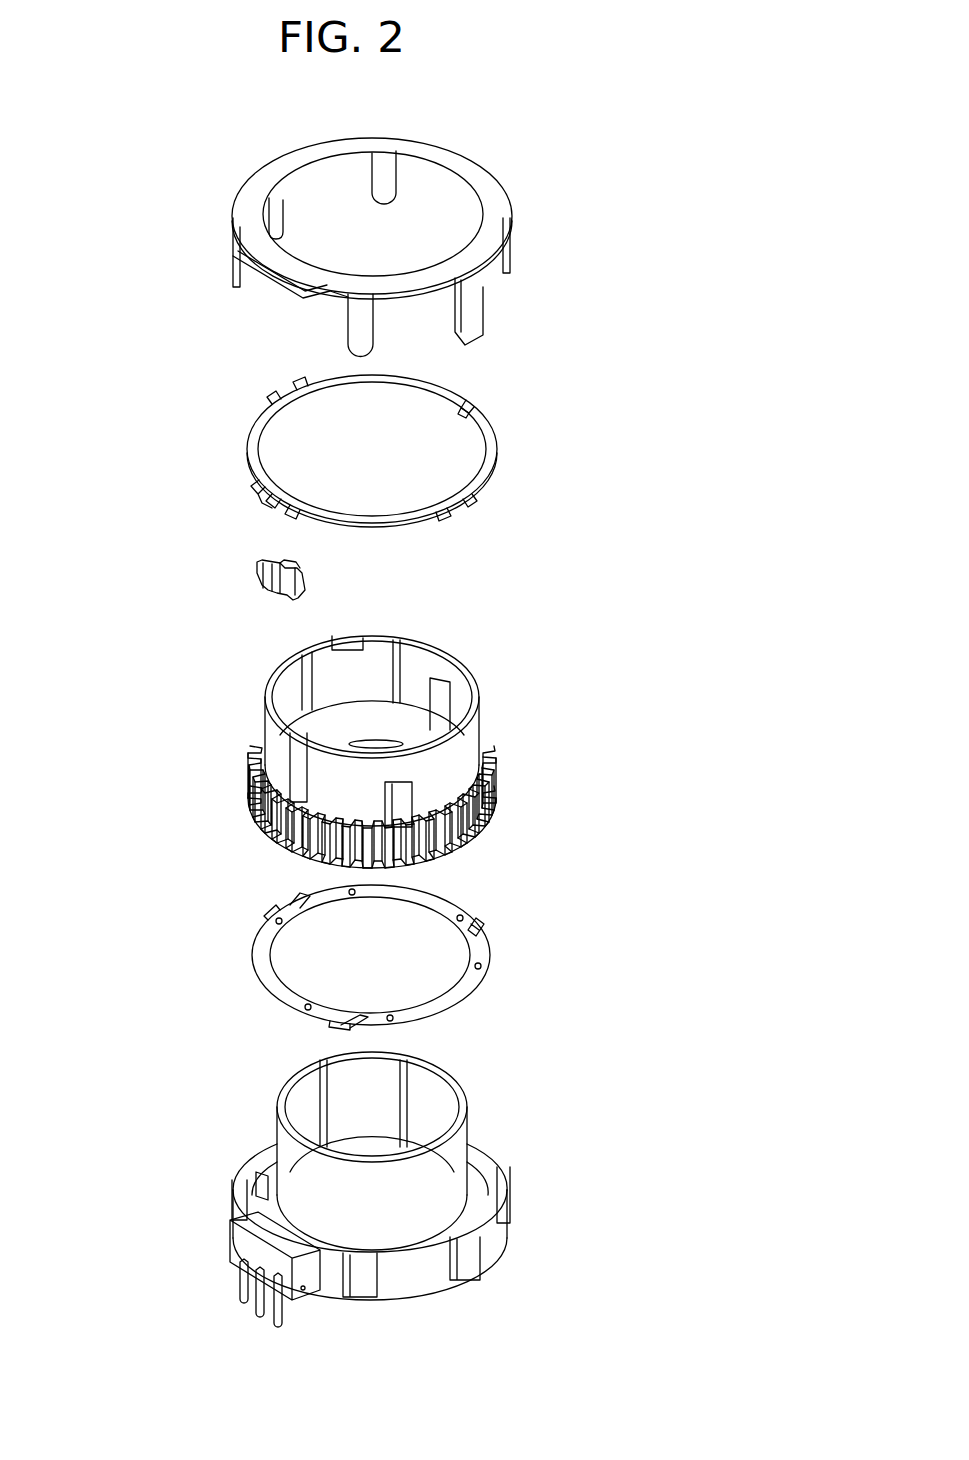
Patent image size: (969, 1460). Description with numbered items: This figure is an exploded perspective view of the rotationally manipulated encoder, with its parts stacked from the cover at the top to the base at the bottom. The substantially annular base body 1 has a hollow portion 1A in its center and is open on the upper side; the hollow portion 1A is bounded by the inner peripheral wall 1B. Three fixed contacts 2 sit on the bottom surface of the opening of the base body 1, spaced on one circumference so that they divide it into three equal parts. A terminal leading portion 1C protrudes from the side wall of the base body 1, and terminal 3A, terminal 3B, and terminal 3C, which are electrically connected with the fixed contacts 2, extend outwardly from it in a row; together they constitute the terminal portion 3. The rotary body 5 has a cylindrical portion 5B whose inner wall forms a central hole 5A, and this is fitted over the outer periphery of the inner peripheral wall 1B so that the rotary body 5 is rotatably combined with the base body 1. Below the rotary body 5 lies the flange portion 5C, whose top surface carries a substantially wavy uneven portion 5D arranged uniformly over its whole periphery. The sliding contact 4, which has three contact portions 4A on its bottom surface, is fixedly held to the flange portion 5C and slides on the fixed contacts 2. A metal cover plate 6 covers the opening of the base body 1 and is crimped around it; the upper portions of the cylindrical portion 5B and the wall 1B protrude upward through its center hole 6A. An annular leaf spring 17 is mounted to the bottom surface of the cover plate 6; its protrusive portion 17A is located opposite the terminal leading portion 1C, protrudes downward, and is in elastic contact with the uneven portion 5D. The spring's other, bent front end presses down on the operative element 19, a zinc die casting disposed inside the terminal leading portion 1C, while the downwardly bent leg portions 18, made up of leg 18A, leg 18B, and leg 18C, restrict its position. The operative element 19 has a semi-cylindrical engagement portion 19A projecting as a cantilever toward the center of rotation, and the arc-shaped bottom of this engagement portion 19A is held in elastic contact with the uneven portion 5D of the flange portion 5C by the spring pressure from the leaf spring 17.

The base body 1 is at (338, 1199).
The hollow portion 1A is at (378, 1121).
The inner peripheral wall 1B is at (443, 1175).
The terminal leading portion 1C is at (243, 1239).
The fixed contacts 2 is at (263, 1197).
The terminal portion 3 is at (177, 1300).
The terminal 3A is at (238, 1293).
The terminal 3B is at (256, 1310).
The terminal 3C is at (274, 1320).
The sliding contact 4 is at (431, 956).
The contact portions 4A is at (480, 933).
The rotary body 5 is at (404, 741).
The central hole 5A is at (358, 725).
The cylindrical portion 5B is at (473, 670).
The flange portion 5C is at (429, 810).
The uneven portion 5D is at (493, 788).
The cover plate 6 is at (417, 247).
The center hole 6A is at (417, 208).
The annular leaf spring 17 is at (362, 456).
The protrusive portion 17A is at (455, 411).
The leg portions 18 is at (176, 493).
The leg 18A is at (270, 492).
The leg 18B is at (270, 510).
The leg 18C is at (273, 520).
The operative element 19 is at (274, 577).
The engagement portion 19A is at (297, 573).